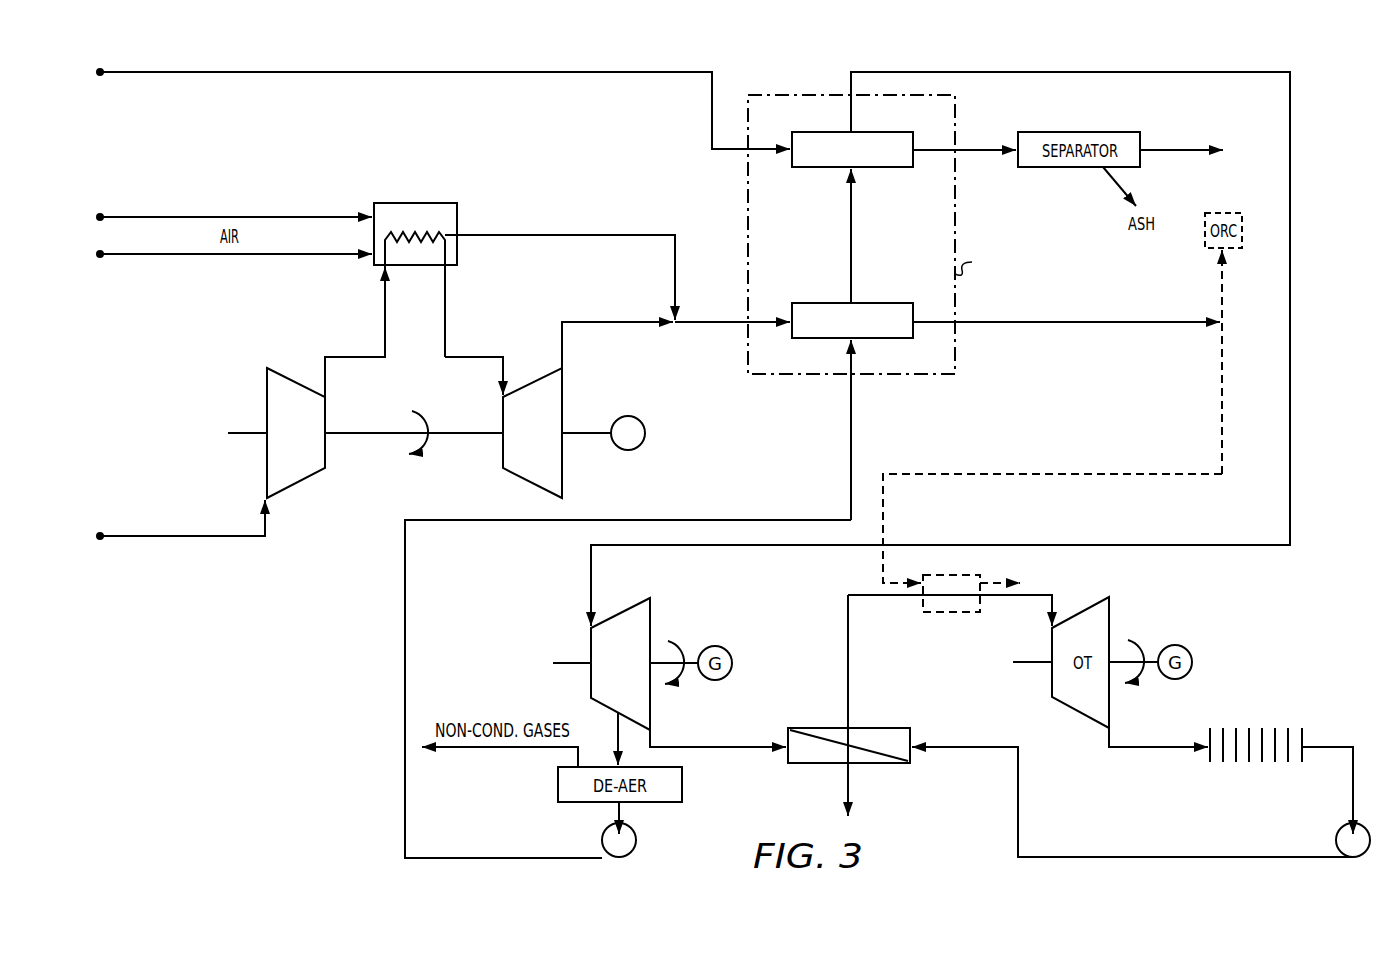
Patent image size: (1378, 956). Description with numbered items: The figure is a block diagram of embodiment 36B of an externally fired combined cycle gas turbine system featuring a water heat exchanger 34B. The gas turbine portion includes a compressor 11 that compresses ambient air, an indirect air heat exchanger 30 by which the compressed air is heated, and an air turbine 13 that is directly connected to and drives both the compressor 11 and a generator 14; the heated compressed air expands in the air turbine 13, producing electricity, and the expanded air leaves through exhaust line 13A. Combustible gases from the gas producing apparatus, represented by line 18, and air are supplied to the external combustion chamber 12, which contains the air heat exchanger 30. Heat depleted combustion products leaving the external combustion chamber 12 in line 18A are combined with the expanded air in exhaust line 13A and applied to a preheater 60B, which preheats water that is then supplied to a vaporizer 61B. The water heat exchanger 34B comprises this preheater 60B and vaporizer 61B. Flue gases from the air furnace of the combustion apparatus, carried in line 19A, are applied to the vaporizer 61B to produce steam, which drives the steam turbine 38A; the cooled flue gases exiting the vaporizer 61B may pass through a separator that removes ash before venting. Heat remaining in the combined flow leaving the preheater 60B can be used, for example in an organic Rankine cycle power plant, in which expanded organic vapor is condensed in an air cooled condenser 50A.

The compressor 11 is at (270, 368).
The external combustion chamber 12 is at (412, 266).
The air turbine 13 is at (528, 383).
The exhaust line 13A is at (635, 323).
The generator 14 is at (628, 416).
The combustible gas line from pyrolyzer 18 is at (100, 215).
The line 18A is at (630, 233).
The line 19A is at (630, 74).
The indirect air heat exchanger 30 is at (452, 240).
The water heat exchanger 34B is at (949, 234).
The embodiment 36B is at (383, 608).
The turbine 38A is at (648, 598).
The condenser 50A is at (1265, 728).
The preheater 60B is at (875, 303).
The vaporizer 61B is at (875, 132).